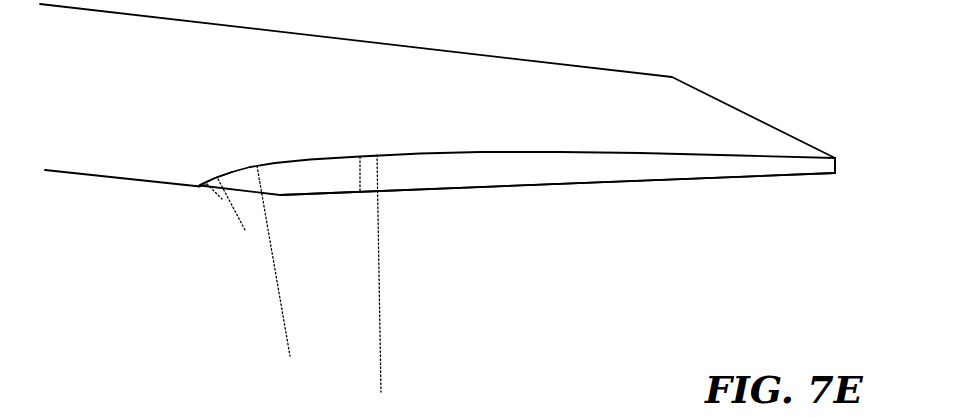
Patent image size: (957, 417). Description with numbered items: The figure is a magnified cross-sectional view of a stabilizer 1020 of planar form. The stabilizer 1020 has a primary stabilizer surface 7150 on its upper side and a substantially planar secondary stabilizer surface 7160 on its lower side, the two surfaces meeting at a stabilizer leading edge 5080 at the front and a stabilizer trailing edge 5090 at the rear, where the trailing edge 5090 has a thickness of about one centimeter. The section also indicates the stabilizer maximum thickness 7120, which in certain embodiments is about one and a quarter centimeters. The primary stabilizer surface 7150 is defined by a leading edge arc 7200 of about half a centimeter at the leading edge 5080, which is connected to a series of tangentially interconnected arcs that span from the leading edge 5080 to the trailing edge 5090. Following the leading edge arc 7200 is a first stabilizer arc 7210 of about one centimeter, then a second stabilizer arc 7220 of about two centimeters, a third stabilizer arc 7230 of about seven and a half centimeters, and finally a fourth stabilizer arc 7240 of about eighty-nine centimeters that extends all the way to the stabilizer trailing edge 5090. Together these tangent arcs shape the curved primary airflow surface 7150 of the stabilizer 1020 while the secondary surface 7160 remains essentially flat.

The stabilizer 1020 is at (530, 182).
The stabilizer leading edge 5080 is at (204, 184).
The stabilizer trailing edge 5090 is at (857, 134).
The stabilizer maximum thickness 7120 is at (358, 166).
The primary stabilizer surface 7150 is at (434, 151).
The secondary stabilizer surface 7160 is at (593, 189).
The leading edge arc 7200 is at (204, 190).
The first stabilizer arc 7210 is at (222, 199).
The second stabilizer arc 7220 is at (246, 226).
The third stabilizer arc 7230 is at (283, 325).
The fourth stabilizer arc 7240 is at (380, 378).